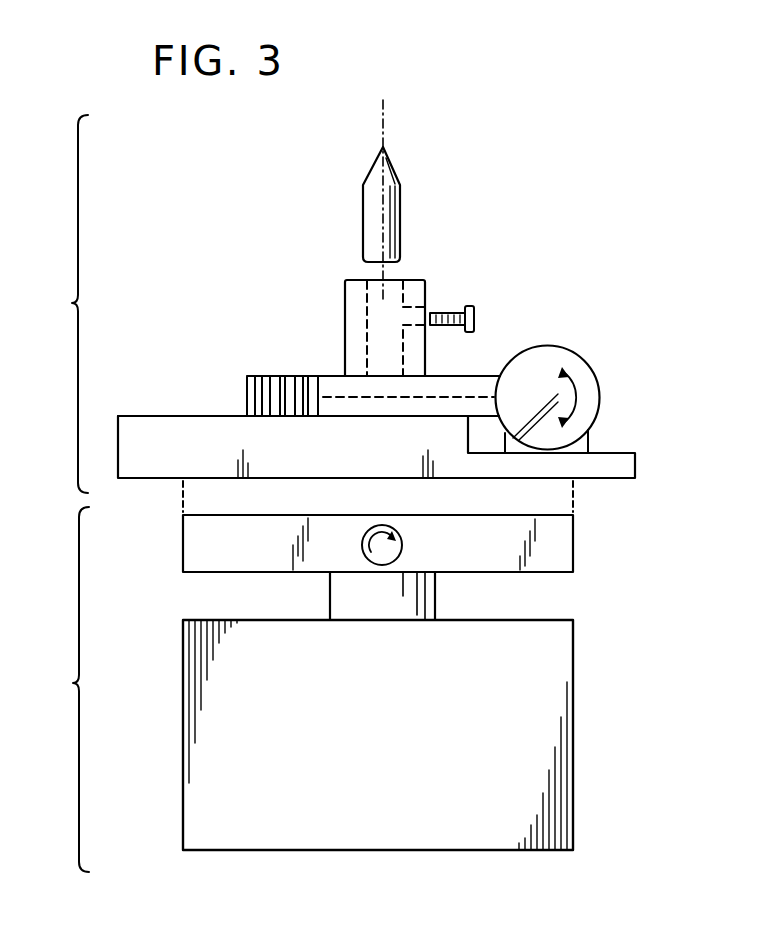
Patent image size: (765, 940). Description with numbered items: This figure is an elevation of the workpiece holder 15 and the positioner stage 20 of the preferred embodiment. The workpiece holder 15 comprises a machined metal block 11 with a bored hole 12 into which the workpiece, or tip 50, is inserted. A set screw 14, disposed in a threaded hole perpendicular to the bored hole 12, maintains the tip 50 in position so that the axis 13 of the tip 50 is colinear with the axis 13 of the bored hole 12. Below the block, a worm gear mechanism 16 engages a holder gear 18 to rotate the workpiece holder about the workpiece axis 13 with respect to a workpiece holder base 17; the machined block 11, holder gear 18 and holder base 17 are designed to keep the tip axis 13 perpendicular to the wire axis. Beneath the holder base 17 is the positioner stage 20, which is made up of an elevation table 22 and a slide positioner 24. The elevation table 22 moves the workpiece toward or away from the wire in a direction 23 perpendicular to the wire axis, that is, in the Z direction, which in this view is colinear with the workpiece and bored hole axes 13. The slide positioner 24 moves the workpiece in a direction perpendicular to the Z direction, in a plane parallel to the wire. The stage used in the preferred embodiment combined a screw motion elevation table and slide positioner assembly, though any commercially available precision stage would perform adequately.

The machined metal block 11 is at (345, 300).
The bored hole 12 is at (380, 340).
The axis 13 is at (383, 128).
The set screw 14 is at (475, 313).
The workpiece holder 15 is at (64, 304).
The worm gear mechanism 16 is at (597, 379).
The workpiece holder base 17 is at (630, 466).
The holder gear 18 is at (240, 392).
The positioner stage 20 is at (63, 689).
The elevation table 22 is at (560, 708).
The direction 23 is at (450, 580).
The slide positioner 24 is at (575, 548).
The workpiece (tip) 50 is at (410, 212).